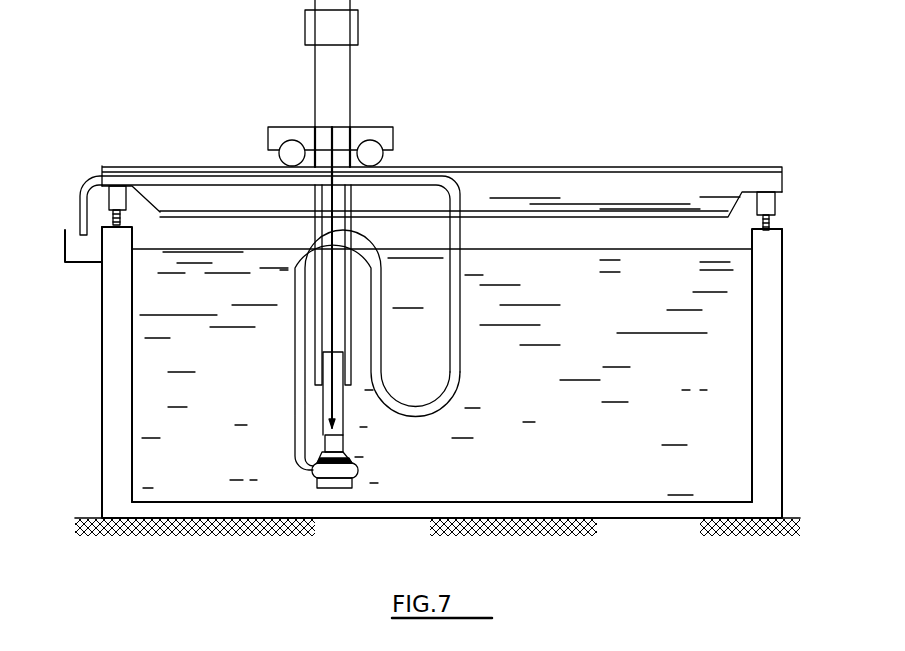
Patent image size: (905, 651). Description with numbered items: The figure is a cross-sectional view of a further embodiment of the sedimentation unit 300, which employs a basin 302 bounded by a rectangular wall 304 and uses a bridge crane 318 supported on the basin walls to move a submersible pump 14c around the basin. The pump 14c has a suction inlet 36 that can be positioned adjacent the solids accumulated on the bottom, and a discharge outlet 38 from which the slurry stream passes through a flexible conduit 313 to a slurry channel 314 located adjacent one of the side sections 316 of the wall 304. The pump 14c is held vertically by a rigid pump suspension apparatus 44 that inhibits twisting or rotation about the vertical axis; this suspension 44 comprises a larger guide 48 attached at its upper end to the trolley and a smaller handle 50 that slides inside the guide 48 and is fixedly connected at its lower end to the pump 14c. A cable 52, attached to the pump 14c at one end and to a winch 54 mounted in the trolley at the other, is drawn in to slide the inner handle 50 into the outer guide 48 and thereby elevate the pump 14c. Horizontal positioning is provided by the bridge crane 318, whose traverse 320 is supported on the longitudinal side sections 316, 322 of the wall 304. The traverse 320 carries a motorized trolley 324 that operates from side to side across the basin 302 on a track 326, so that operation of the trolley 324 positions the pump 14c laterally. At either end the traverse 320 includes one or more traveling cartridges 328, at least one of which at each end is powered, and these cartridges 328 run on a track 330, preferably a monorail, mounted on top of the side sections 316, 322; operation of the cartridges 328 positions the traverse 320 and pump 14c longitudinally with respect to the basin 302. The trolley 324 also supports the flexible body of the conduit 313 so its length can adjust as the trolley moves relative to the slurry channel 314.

The pump 14c is at (352, 466).
The suction inlet 36 is at (340, 483).
The discharge outlet 38 is at (303, 477).
The pump suspension apparatus 44 is at (352, 344).
The guide 48 is at (352, 273).
The handle 50 is at (347, 410).
The cable 52 is at (333, 335).
The winch 54 is at (337, 32).
The sedimentation unit 300 is at (86, 445).
The basin 302 is at (597, 468).
The wall 304 is at (770, 455).
The flexible conduit 313 is at (462, 341).
The channel 314 is at (64, 261).
The side section 316 is at (123, 368).
The bridge crane 318 is at (418, 114).
The traverse 320 is at (647, 167).
The side section 322 is at (783, 360).
The motorized trolley 324 is at (282, 135).
The track 326 is at (502, 168).
The traveling cartridge 328 is at (118, 200).
The track 330 is at (757, 229).